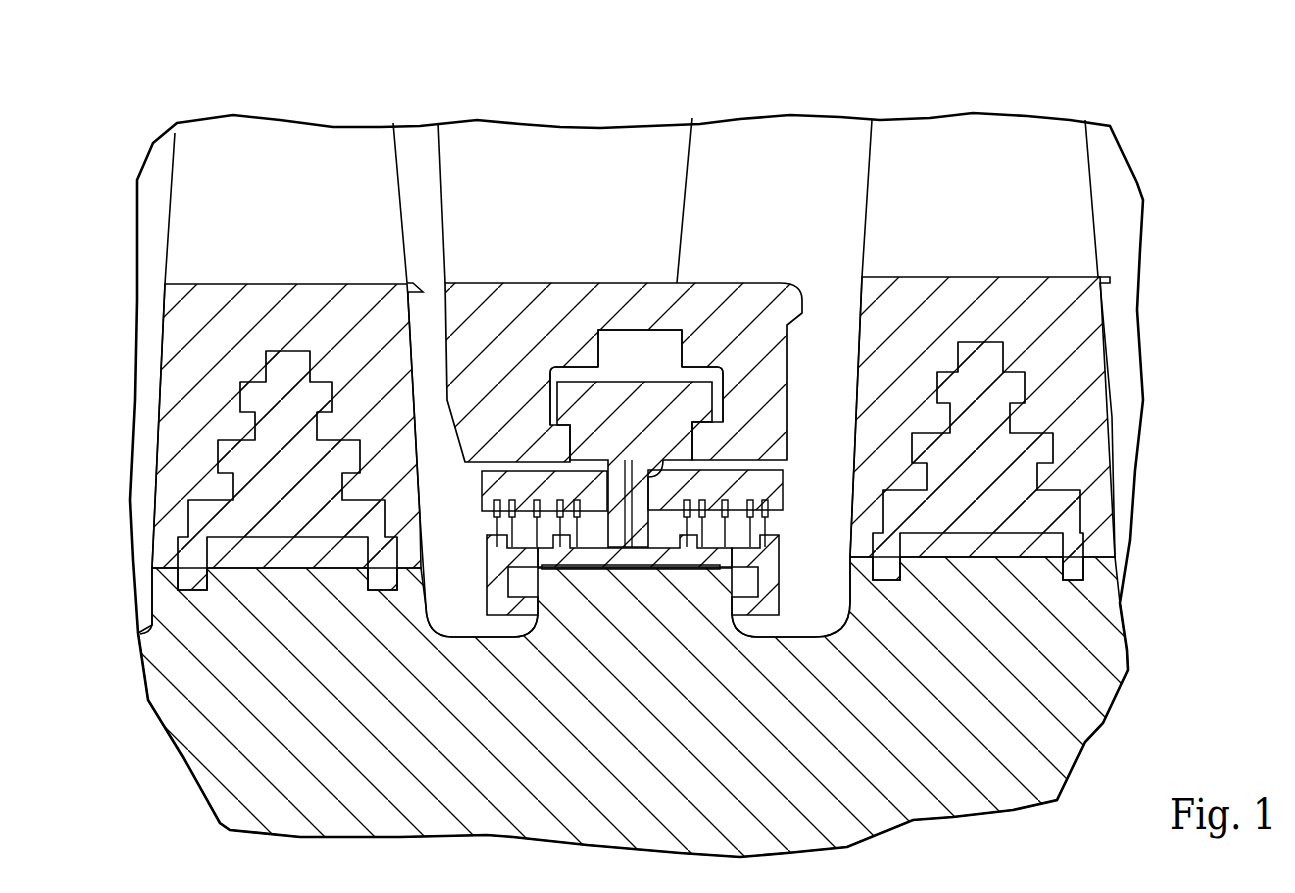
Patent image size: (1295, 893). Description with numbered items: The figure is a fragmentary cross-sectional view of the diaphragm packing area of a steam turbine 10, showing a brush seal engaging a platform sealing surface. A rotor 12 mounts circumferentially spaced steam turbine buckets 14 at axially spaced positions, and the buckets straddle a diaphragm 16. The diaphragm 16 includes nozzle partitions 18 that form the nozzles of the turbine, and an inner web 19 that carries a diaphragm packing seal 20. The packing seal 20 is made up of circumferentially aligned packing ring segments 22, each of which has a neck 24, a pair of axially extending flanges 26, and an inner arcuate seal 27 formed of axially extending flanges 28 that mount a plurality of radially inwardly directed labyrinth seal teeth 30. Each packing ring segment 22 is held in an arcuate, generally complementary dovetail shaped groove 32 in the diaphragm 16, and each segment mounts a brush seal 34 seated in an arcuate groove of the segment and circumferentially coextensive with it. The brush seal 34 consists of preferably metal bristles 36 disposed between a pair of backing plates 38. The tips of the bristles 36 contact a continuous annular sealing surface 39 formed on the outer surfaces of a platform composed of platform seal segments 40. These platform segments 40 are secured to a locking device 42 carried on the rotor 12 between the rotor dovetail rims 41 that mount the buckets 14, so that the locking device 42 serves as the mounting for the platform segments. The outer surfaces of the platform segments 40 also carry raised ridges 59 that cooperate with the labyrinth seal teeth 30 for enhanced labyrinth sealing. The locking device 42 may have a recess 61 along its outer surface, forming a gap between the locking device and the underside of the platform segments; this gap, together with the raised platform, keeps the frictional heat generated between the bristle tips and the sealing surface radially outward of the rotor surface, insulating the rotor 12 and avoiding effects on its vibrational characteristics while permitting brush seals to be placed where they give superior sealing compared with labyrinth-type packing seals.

The steam turbine 10 is at (228, 95).
The rotor 12 is at (1073, 703).
The steam turbine buckets 14 is at (187, 325).
The diaphragm 16 is at (703, 282).
The nozzle partitions 18 is at (522, 145).
The inner web 19 is at (747, 308).
The diaphragm packing seal 20 is at (831, 578).
The packing ring segments 22 is at (613, 392).
The neck 24 is at (640, 438).
The axially extending flanges 26 is at (715, 405).
The inner arcuate seal 27 is at (500, 540).
The axially extending flanges 28 is at (763, 485).
The labyrinth seal teeth 30 is at (617, 575).
The dovetail shaped groove 32 is at (635, 347).
The brush seal 34 is at (613, 460).
The bristles 36 is at (608, 570).
The backing plates 38 is at (640, 537).
The annular sealing surface 39 is at (560, 575).
The platform seal segments 40 is at (784, 630).
The rotor dovetail rims 41 is at (283, 475).
The locking device 42 is at (553, 593).
The raised ridges 59 is at (777, 535).
The recess 61 is at (678, 568).